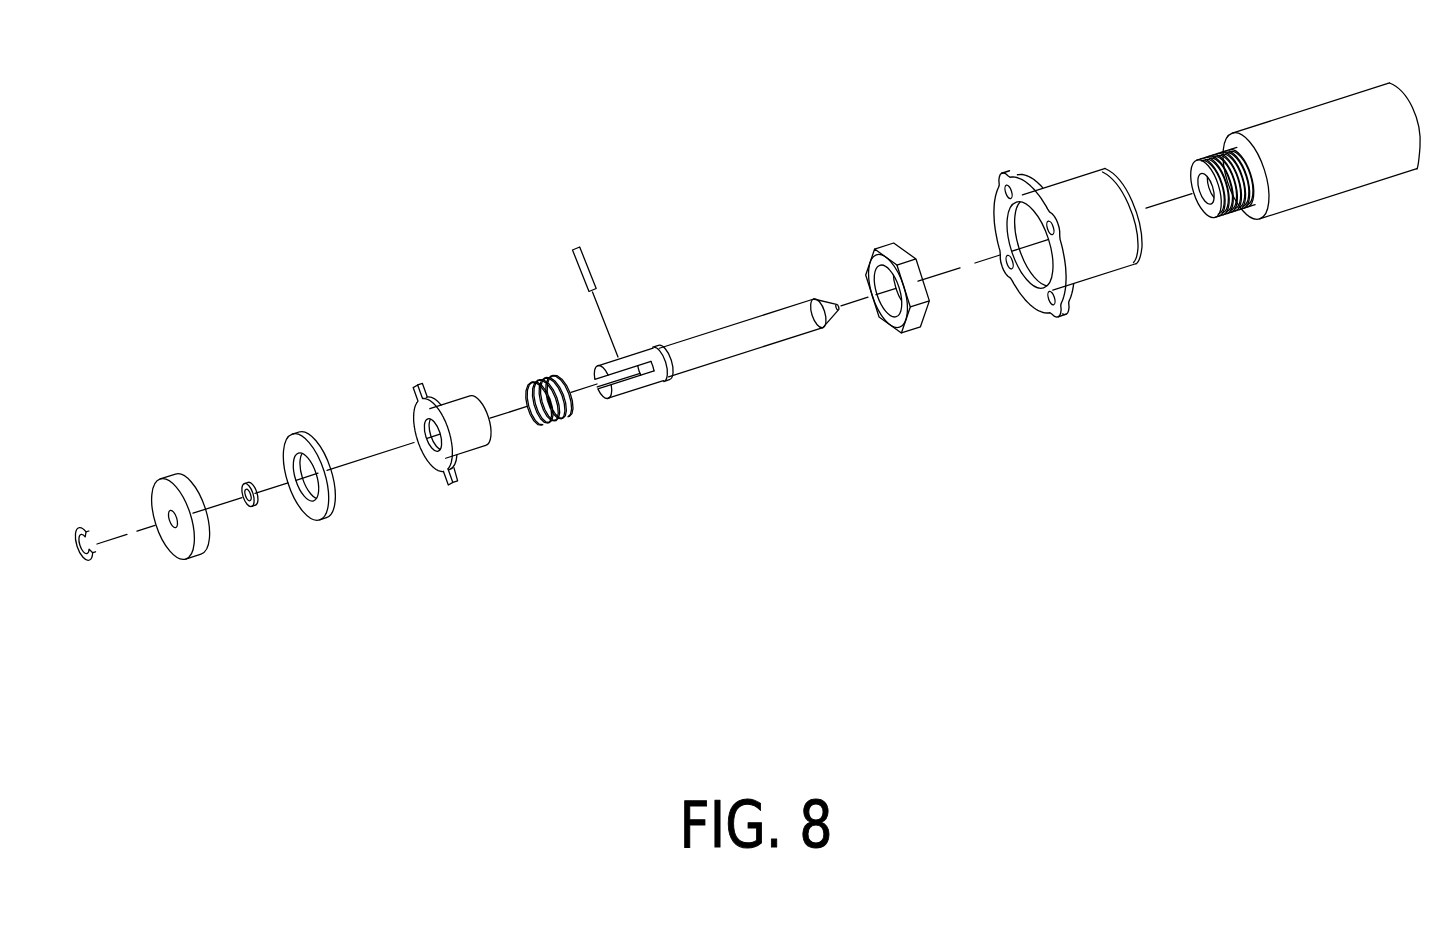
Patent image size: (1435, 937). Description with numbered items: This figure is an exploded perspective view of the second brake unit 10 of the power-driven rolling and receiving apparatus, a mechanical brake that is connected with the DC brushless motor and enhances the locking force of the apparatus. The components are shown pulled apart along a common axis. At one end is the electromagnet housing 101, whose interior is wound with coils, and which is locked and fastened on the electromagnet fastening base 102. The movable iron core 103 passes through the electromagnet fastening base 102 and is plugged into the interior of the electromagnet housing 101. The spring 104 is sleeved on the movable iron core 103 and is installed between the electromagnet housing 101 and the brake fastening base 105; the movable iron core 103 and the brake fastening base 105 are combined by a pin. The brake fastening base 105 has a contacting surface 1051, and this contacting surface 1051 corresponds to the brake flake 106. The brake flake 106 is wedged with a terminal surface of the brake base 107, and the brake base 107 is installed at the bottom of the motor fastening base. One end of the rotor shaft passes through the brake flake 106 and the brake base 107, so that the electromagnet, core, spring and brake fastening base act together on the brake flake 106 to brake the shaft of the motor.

The second brake unit 10 is at (937, 140).
The electromagnet housing 101 is at (1317, 183).
The electromagnet fastening base 102 is at (1108, 265).
The movable iron core 103 is at (737, 342).
The spring 104 is at (563, 422).
The brake fastening base 105 is at (478, 437).
The contacting surface 1051 is at (440, 462).
The brake flake 106 is at (307, 517).
The brake base 107 is at (173, 558).